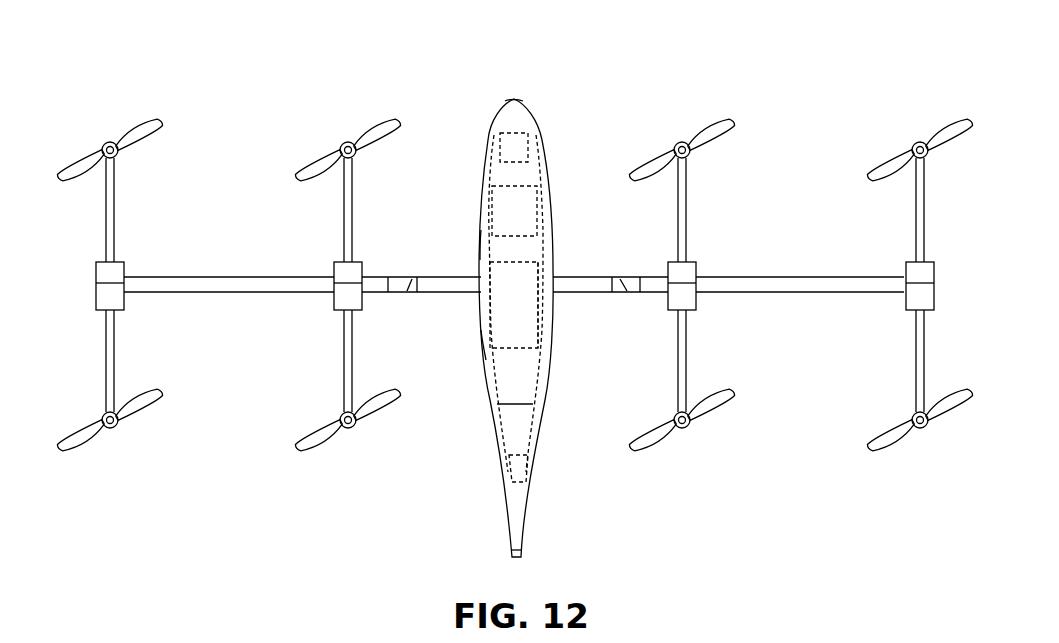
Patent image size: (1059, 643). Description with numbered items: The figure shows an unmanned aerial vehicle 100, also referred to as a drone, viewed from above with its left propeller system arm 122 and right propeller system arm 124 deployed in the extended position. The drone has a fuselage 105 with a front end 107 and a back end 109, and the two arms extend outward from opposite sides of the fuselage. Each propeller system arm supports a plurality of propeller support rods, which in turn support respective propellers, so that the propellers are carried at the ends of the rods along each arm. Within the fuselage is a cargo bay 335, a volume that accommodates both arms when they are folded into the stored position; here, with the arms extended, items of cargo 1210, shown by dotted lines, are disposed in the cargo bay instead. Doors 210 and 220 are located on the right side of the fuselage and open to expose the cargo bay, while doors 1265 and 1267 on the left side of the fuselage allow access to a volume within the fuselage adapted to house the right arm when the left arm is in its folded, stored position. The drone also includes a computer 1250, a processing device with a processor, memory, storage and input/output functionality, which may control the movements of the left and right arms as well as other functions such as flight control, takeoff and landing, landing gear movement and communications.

The unmanned aerial vehicle 100 is at (552, 92).
The fuselage 105 is at (498, 114).
The front end 107 is at (512, 99).
The back end 109 is at (518, 558).
The left propeller system arm 122 is at (375, 293).
The right propeller system arm 124 is at (657, 293).
The door 210 is at (547, 332).
The door 220 is at (548, 242).
The cargo bay 335 is at (515, 394).
The items of cargo 1210 is at (528, 143).
The computer 1250 is at (524, 472).
The door 1265 is at (479, 235).
The door 1267 is at (480, 330).